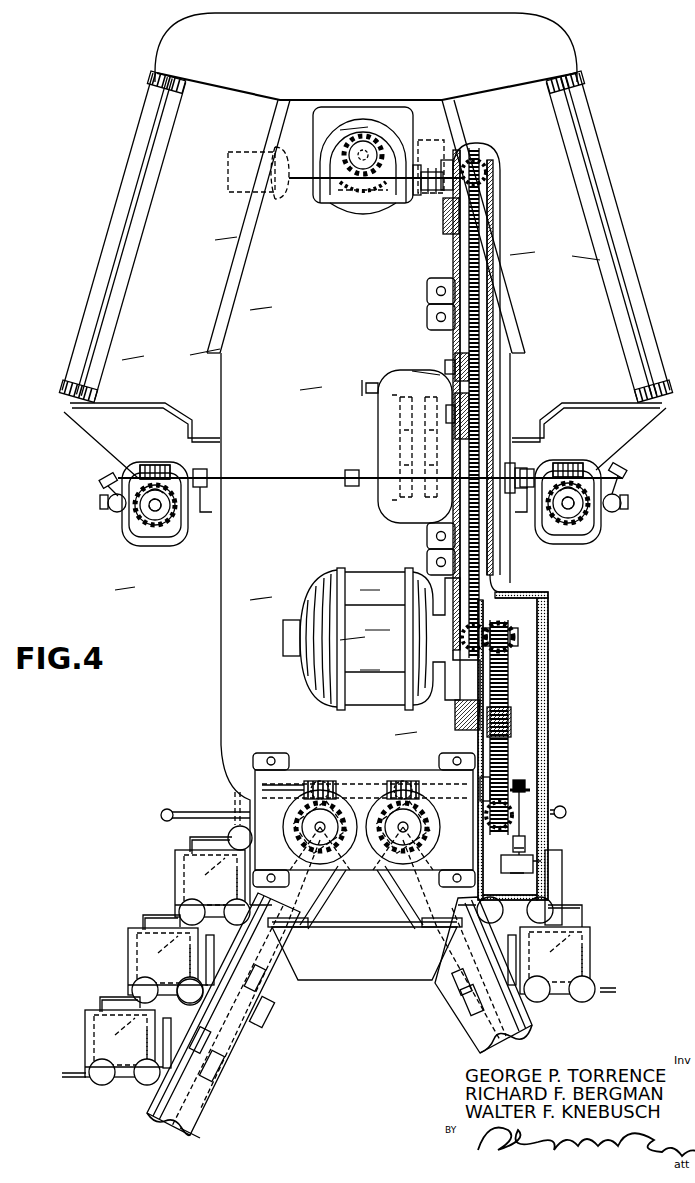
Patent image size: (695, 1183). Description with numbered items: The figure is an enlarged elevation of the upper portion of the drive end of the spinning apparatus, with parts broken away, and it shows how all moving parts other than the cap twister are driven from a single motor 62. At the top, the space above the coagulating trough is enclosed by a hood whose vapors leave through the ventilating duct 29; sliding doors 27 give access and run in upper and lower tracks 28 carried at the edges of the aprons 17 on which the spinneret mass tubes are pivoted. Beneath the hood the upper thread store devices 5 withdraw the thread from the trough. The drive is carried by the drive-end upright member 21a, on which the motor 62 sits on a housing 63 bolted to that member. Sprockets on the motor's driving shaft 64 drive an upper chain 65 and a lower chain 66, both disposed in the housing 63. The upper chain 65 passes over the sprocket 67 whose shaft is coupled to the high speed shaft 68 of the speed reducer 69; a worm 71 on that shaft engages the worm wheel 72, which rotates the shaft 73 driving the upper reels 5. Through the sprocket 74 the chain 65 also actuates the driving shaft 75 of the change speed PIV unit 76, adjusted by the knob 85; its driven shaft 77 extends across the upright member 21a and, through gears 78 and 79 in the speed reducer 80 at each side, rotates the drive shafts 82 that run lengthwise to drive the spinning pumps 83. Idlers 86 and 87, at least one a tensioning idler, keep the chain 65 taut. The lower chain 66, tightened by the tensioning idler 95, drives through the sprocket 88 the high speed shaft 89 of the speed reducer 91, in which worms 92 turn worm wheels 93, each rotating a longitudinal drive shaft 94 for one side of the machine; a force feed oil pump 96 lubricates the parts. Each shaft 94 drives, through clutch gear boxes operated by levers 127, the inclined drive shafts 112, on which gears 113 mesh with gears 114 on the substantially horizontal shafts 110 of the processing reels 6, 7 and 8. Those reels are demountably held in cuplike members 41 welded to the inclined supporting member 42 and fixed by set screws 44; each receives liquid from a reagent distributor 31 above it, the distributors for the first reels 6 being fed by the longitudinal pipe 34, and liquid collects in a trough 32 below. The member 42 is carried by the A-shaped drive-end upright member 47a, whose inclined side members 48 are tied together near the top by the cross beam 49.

The ventilating duct 29 is at (366, 47).
The sliding doors 27 is at (366, 236).
The upper and lower tracks 28 is at (341, 232).
The aprons 17 is at (365, 416).
The thread store device 5 is at (329, 158).
The speed reducer 69 is at (363, 176).
The worm wheel 72 is at (363, 140).
The shaft 73 is at (376, 125).
The worm 71 is at (363, 213).
The high speed shaft 68 is at (423, 197).
The sprocket 67 is at (476, 374).
The idler 86 is at (492, 200).
The upper chain 65 is at (471, 403).
The housing 63 is at (431, 496).
The PIV unit 76 is at (414, 432).
The driving shaft 75 is at (421, 419).
The knob 85 is at (349, 390).
The idler 87 is at (498, 366).
The sprocket 74 is at (493, 414).
The driven shaft 77 is at (370, 472).
The gear 79 is at (362, 504).
The speed reducer 80 is at (361, 524).
The drive shaft 82 is at (364, 535).
The gear 78 is at (365, 450).
The spinning pumps 83 is at (362, 487).
The drive-end upright member 21a is at (352, 629).
The motor 62 is at (371, 624).
The lower chain 66 is at (534, 727).
The driving shaft 64 is at (532, 637).
The tensioning idler 95 is at (535, 722).
The sprocket 88 is at (531, 805).
The force feed oil pump 96 is at (513, 856).
The high speed shaft 89 is at (364, 803).
The worm wheels 93 is at (365, 827).
The drive shaft 94 is at (361, 848).
The worms 92 is at (366, 765).
The speed reducer 91 is at (291, 758).
The lever 127 is at (371, 794).
The pipe 34 is at (226, 802).
The cuplike members 41 is at (390, 879).
The thread store device 6 is at (198, 887).
The thread store device 7 is at (373, 965).
The thread store device 8 is at (106, 1047).
The drive shafts 110 is at (339, 1001).
The set screws 44 is at (191, 994).
The reagent distributor 31 is at (349, 966).
The collecting trough 32 is at (339, 958).
The cross beam 49 is at (364, 965).
The inclined drive shafts 112 is at (350, 975).
The gears 113 is at (341, 1013).
The gears 114 is at (330, 1012).
The side members 48 is at (339, 1014).
The inclined supporting member 42 is at (341, 1076).
The drive-end upright member 47a is at (202, 1146).